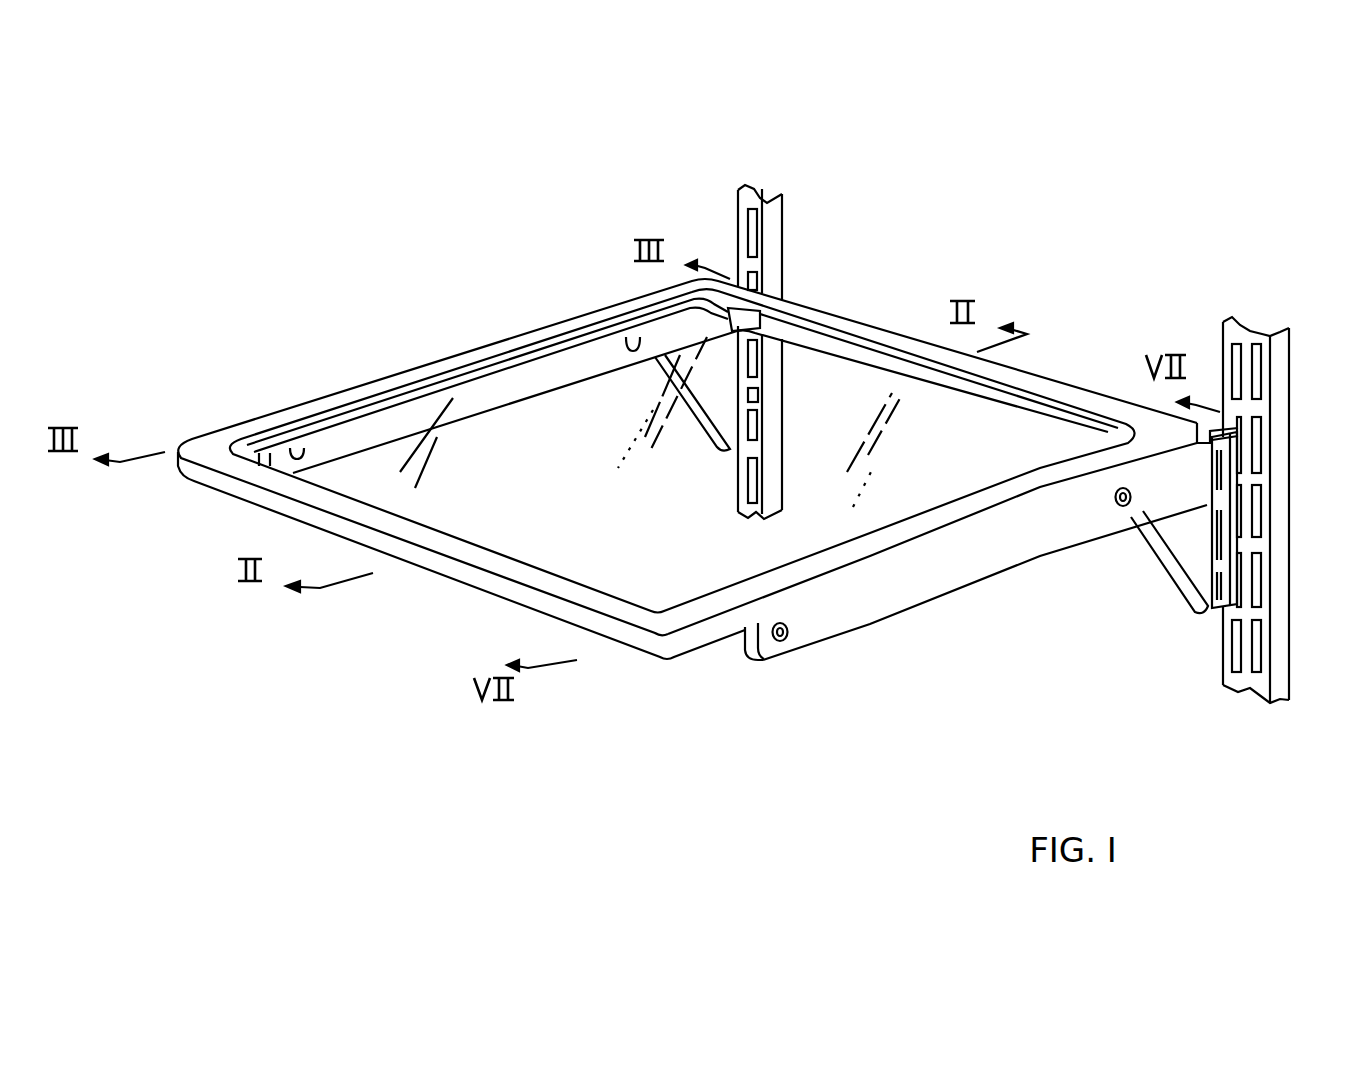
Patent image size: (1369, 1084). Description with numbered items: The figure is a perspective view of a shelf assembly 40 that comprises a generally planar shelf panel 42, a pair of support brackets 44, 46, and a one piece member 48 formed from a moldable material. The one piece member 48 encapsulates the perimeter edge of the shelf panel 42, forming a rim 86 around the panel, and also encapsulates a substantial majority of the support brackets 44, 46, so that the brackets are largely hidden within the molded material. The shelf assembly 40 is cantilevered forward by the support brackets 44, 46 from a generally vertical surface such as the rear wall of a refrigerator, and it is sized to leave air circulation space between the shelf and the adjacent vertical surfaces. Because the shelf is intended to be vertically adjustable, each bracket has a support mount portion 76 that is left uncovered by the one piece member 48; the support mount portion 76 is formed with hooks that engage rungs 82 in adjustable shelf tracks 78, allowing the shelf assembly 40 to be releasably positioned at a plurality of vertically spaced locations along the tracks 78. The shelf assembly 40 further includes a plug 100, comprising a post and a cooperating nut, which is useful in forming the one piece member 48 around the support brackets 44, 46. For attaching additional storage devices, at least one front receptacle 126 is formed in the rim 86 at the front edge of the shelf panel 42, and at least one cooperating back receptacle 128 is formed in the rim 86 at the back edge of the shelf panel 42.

The shelf assembly 40 is at (316, 676).
The shelf panel 42 is at (1002, 422).
The support bracket 44 is at (518, 390).
The support bracket 46 is at (1000, 556).
The one piece member 48 is at (937, 593).
The support mount portion 76 is at (1232, 555).
The adjustable shelf tracks 78 is at (773, 197).
The rungs 82 is at (755, 263).
The rim 86 is at (418, 365).
The plug 100 is at (790, 640).
The front receptacle 126 is at (258, 450).
The back receptacle 128 is at (757, 325).